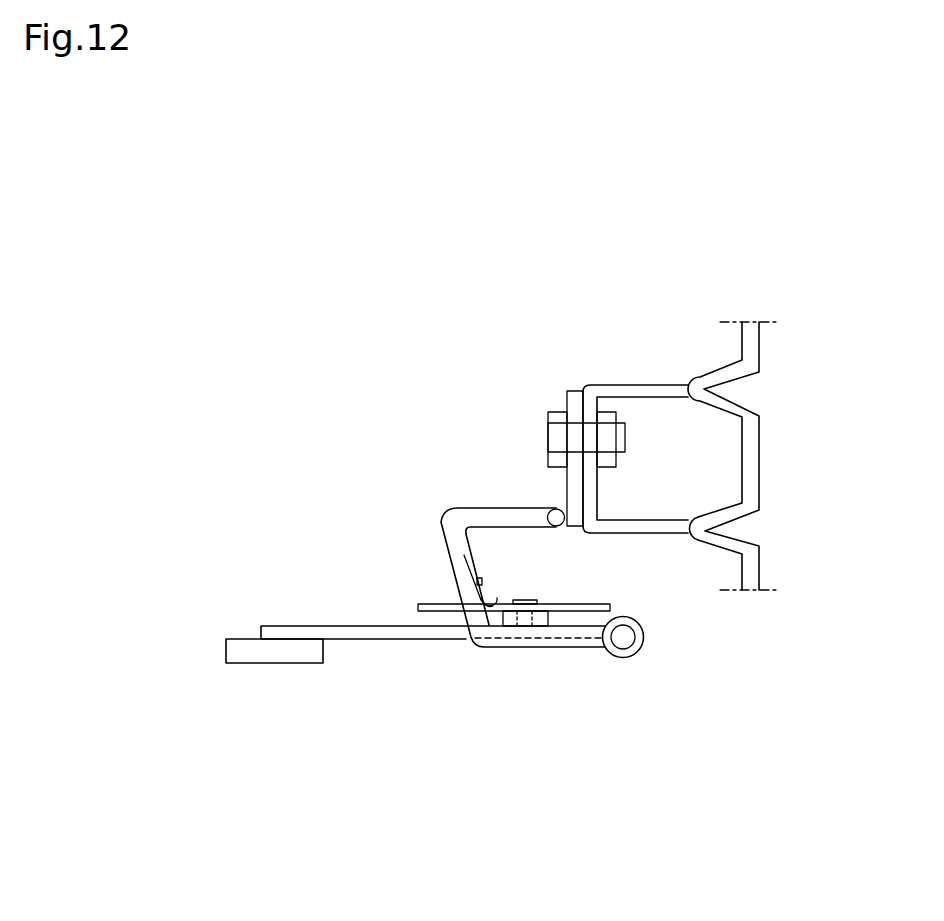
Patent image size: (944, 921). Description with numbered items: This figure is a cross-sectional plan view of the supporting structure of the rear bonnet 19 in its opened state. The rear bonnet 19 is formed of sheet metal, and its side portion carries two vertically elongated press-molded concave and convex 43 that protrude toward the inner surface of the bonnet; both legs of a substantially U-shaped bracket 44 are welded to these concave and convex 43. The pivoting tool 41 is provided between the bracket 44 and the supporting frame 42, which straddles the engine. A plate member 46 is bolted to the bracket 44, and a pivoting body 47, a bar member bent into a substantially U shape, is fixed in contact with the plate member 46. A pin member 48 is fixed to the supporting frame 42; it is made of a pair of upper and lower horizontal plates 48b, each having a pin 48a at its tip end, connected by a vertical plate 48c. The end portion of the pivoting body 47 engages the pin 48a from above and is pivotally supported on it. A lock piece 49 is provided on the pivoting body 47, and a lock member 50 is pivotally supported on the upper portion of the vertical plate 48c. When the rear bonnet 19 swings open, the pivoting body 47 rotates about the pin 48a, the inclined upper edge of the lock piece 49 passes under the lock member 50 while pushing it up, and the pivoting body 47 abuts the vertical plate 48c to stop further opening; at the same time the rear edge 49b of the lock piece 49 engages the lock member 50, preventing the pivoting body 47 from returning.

The rear bonnet 19 is at (748, 456).
The pivoting tool 41 is at (298, 440).
The supporting frame 42 is at (243, 638).
The concave and convex 43 is at (712, 402).
The bracket 44 is at (608, 395).
The plate member 46 is at (573, 392).
The pivoting body 47 is at (478, 508).
The pin member 48 is at (460, 691).
The pin 48a is at (623, 640).
The horizontal plate 48b is at (457, 633).
The vertical plate 48c is at (540, 666).
The lock piece 49 is at (454, 552).
The rear edge 49b is at (514, 575).
The lock member 50 is at (428, 604).